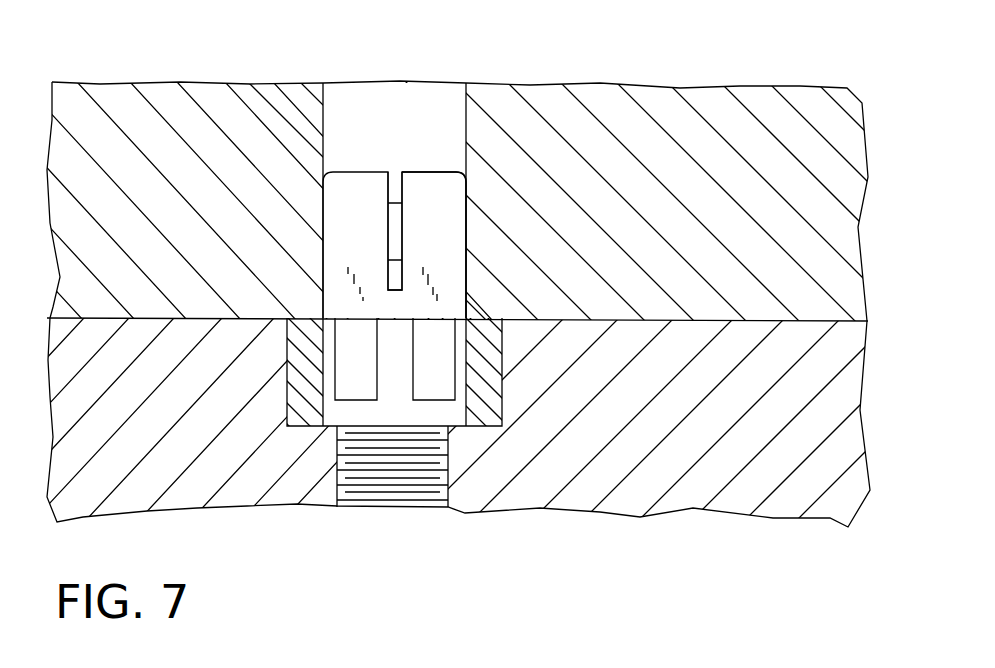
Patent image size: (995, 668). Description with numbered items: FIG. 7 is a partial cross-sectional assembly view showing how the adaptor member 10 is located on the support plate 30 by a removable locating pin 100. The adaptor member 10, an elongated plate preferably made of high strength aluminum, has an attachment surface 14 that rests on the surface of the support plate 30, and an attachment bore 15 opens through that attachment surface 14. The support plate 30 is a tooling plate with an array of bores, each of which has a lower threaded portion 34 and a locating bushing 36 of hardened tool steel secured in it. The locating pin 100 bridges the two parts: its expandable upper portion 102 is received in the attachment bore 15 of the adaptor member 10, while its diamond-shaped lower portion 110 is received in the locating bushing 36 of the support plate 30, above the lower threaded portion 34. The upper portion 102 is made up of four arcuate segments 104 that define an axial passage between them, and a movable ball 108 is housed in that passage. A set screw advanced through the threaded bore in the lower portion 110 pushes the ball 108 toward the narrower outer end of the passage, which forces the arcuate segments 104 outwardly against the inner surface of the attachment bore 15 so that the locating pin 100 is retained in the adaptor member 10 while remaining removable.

The adaptor member 10 is at (688, 118).
The attachment surface 14 is at (793, 340).
The attachment bore 15 is at (323, 128).
The support plate 30 is at (677, 492).
The lower threaded portion 34 is at (437, 482).
The locating bushing 36 is at (303, 415).
The locating pin 100 is at (370, 172).
The expandable upper portion 102 is at (430, 168).
The arcuate segments 104 is at (378, 242).
The ball 108 is at (394, 210).
The lower portion 110 is at (397, 392).